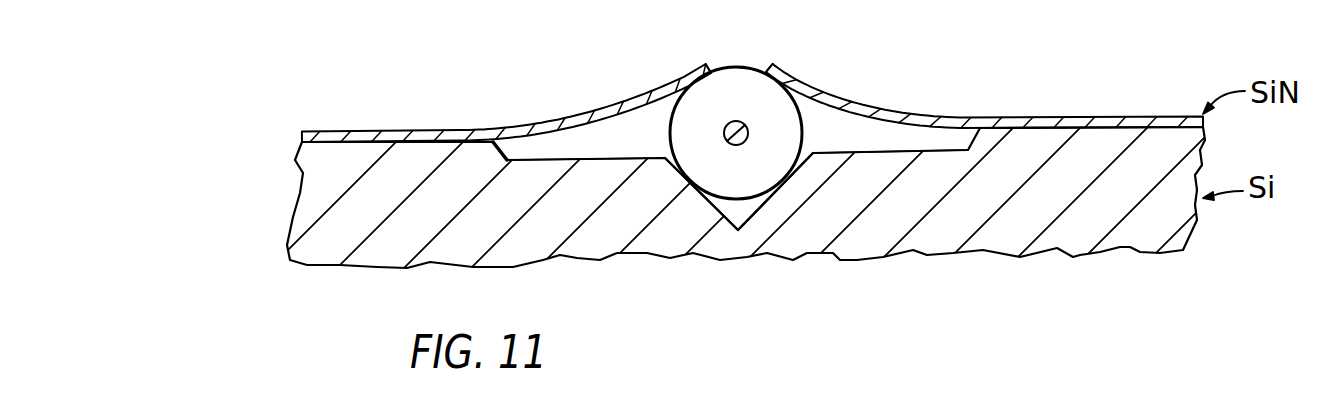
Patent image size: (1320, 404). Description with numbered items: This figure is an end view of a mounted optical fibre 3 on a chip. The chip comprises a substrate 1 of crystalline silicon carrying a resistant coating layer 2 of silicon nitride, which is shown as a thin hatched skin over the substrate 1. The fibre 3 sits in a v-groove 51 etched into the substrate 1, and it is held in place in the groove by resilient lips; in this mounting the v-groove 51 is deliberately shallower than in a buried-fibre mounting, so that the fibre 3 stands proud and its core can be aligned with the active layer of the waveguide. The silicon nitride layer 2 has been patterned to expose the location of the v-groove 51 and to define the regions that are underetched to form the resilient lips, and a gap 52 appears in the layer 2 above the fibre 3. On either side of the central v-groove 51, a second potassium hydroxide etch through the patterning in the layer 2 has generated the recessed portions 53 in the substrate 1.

The substrate 1 is at (450, 212).
The resistant coating layer 2 is at (427, 135).
The optical fibre 3 is at (715, 175).
The v-groove 51 is at (743, 212).
The opening in membrane 52 is at (755, 63).
The recessed portions 53 is at (592, 145).